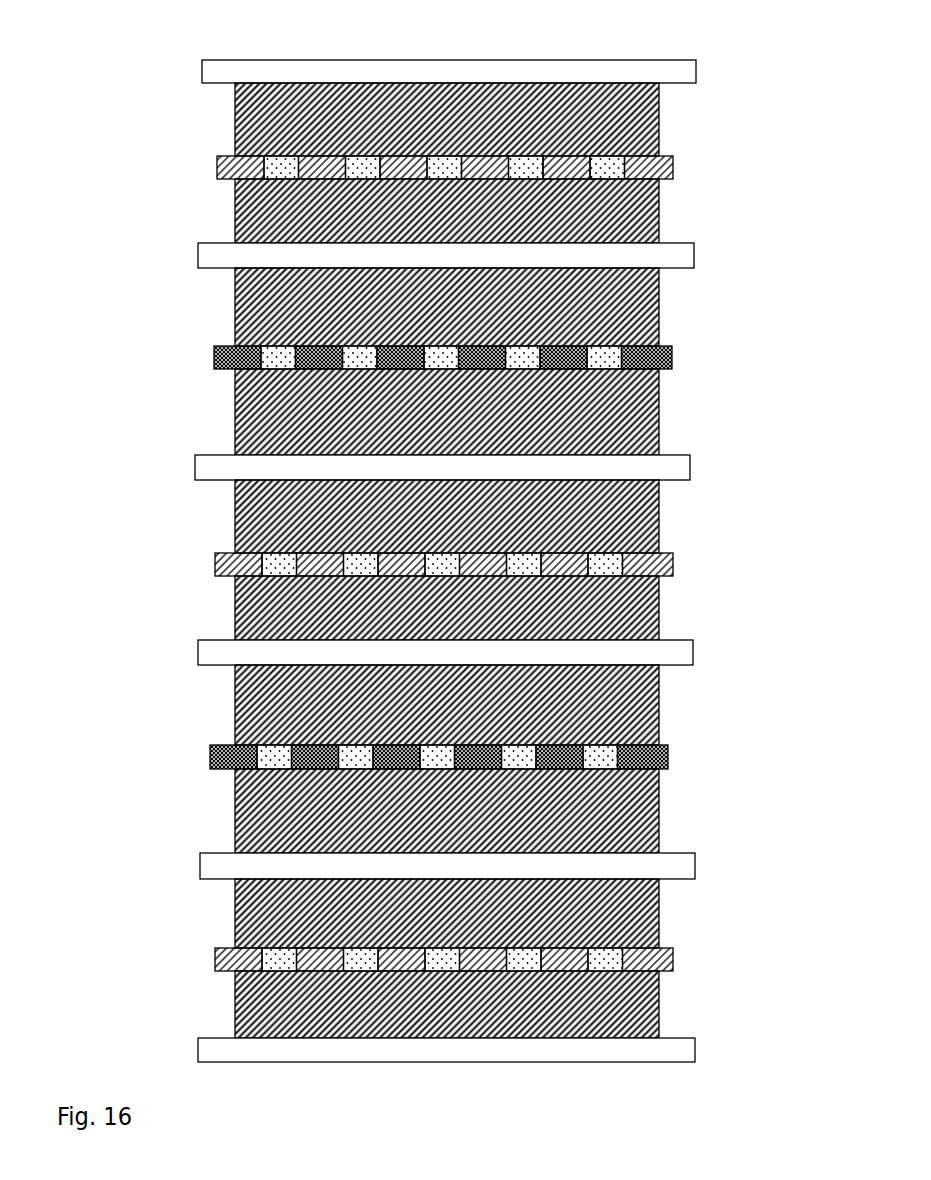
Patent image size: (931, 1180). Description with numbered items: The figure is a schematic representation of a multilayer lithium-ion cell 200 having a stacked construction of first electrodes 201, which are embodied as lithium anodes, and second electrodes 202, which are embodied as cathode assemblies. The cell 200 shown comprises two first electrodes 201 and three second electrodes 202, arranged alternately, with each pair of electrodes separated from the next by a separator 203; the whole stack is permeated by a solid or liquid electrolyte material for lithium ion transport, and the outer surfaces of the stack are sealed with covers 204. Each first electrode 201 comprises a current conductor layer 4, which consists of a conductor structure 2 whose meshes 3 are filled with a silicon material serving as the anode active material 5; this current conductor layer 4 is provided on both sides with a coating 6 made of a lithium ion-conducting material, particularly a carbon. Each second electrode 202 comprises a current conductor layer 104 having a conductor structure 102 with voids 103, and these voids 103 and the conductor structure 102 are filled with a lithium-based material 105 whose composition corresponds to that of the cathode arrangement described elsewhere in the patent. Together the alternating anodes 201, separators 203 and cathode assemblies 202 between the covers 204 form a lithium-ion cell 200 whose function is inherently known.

The lithium-ion cell 200 is at (437, 146).
The second electrode 202 is at (203, 120).
The current conductor layer 104 is at (442, 169).
The conductor structure 102 is at (672, 157).
The voids 103 is at (544, 181).
The lithium-based material 105 is at (602, 163).
The covers 204 is at (665, 70).
The separator 203 is at (677, 258).
The first electrode 201 is at (424, 374).
The current conductor layer 4 is at (446, 328).
The conductor structure 2 is at (672, 353).
The meshes 3 is at (532, 328).
The anode active material 5 is at (441, 357).
The coating 6 is at (659, 432).